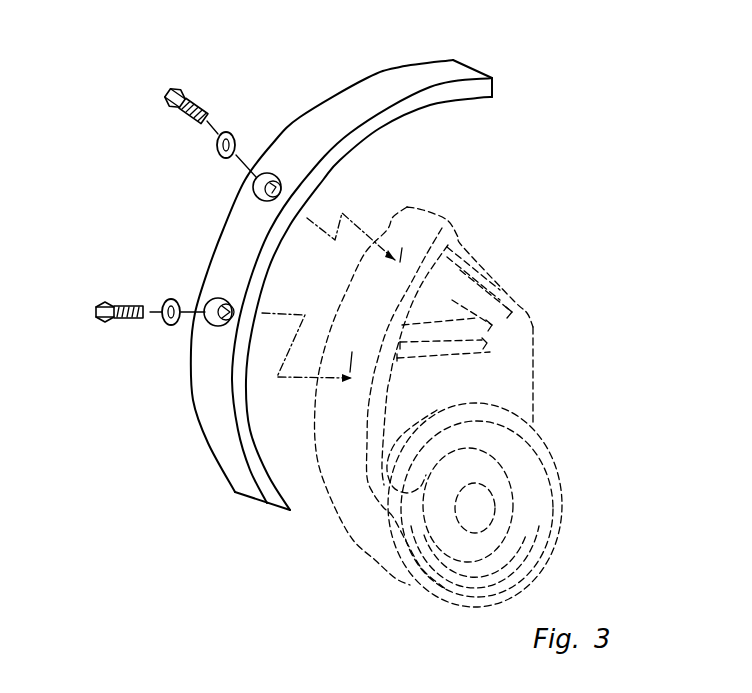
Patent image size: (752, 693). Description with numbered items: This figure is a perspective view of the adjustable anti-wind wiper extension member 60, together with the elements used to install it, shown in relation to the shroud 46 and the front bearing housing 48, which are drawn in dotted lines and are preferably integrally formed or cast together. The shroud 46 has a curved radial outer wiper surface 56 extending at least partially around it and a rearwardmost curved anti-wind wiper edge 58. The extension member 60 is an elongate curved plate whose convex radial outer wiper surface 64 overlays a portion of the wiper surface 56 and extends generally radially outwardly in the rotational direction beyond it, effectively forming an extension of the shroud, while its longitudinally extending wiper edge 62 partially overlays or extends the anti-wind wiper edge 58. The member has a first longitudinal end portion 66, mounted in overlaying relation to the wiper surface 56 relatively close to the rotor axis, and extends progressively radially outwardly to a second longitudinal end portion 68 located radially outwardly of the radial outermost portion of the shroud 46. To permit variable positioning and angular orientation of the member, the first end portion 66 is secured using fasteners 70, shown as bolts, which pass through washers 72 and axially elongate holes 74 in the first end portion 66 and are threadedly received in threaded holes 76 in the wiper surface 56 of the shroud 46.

The shroud 46 is at (455, 421).
The front bearing housing 48 is at (505, 412).
The radial outer wiper surface 56 is at (340, 503).
The anti-wind wiper edge 58 is at (455, 237).
The anti-wind wiper extension member 60 is at (388, 304).
The wiper edge 62 is at (463, 90).
The radial outer wiper surface 64 is at (402, 80).
The first longitudinal end portion 66 is at (233, 493).
The second longitudinal end portion 68 is at (463, 62).
The fasteners 70 is at (170, 110).
The washers 72 is at (226, 132).
The axially elongate holes 74 is at (275, 185).
The threaded holes 76 is at (344, 297).